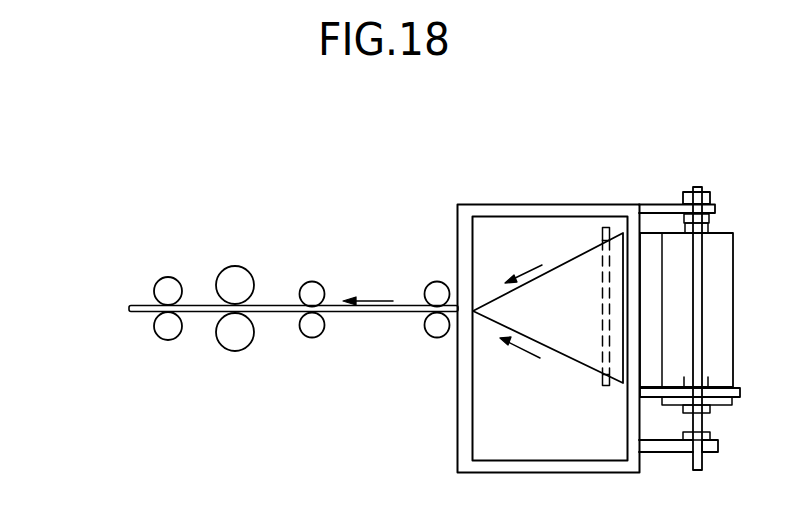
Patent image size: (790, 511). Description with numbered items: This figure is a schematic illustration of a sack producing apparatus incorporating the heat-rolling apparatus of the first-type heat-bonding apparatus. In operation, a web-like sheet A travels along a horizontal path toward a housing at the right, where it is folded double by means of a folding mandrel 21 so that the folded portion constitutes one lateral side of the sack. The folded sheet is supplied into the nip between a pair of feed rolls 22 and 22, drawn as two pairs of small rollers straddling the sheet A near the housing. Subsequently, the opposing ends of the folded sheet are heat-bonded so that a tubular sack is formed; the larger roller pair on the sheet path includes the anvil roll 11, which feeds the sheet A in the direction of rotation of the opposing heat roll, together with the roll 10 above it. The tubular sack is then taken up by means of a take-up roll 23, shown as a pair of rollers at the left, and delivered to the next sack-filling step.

The web-like sheet A is at (140, 315).
The upper feed roller 10 is at (233, 277).
The anvil roll 11 is at (237, 340).
The folding mandrel 21 is at (558, 290).
The feed rolls 22 is at (312, 282).
The take-up roll 23 is at (167, 277).